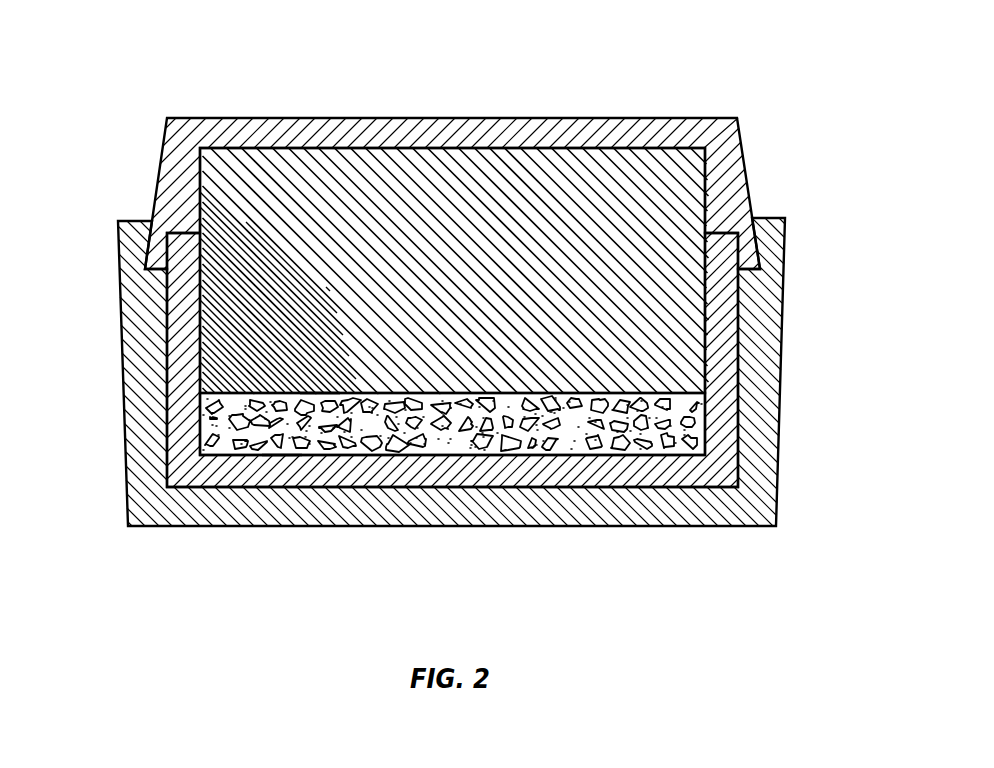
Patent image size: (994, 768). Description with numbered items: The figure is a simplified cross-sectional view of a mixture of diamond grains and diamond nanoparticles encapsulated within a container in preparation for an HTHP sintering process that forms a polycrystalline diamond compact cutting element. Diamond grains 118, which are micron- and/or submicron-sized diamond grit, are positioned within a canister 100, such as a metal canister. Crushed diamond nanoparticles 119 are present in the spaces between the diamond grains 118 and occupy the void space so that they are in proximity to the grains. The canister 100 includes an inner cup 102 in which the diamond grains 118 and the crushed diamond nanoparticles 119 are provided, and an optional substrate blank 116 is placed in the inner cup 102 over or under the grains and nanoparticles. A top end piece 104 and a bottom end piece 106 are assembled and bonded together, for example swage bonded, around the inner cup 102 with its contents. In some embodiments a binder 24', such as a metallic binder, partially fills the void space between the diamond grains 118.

The canister 100 is at (116, 112).
The inner cup 102 is at (718, 330).
The top end piece 104 is at (725, 170).
The bottom end piece 106 is at (758, 432).
The substrate blank 116 is at (443, 198).
The diamond grains 118 is at (282, 460).
The crushed diamond nanoparticles 119 is at (320, 388).
The binder 24' is at (508, 493).